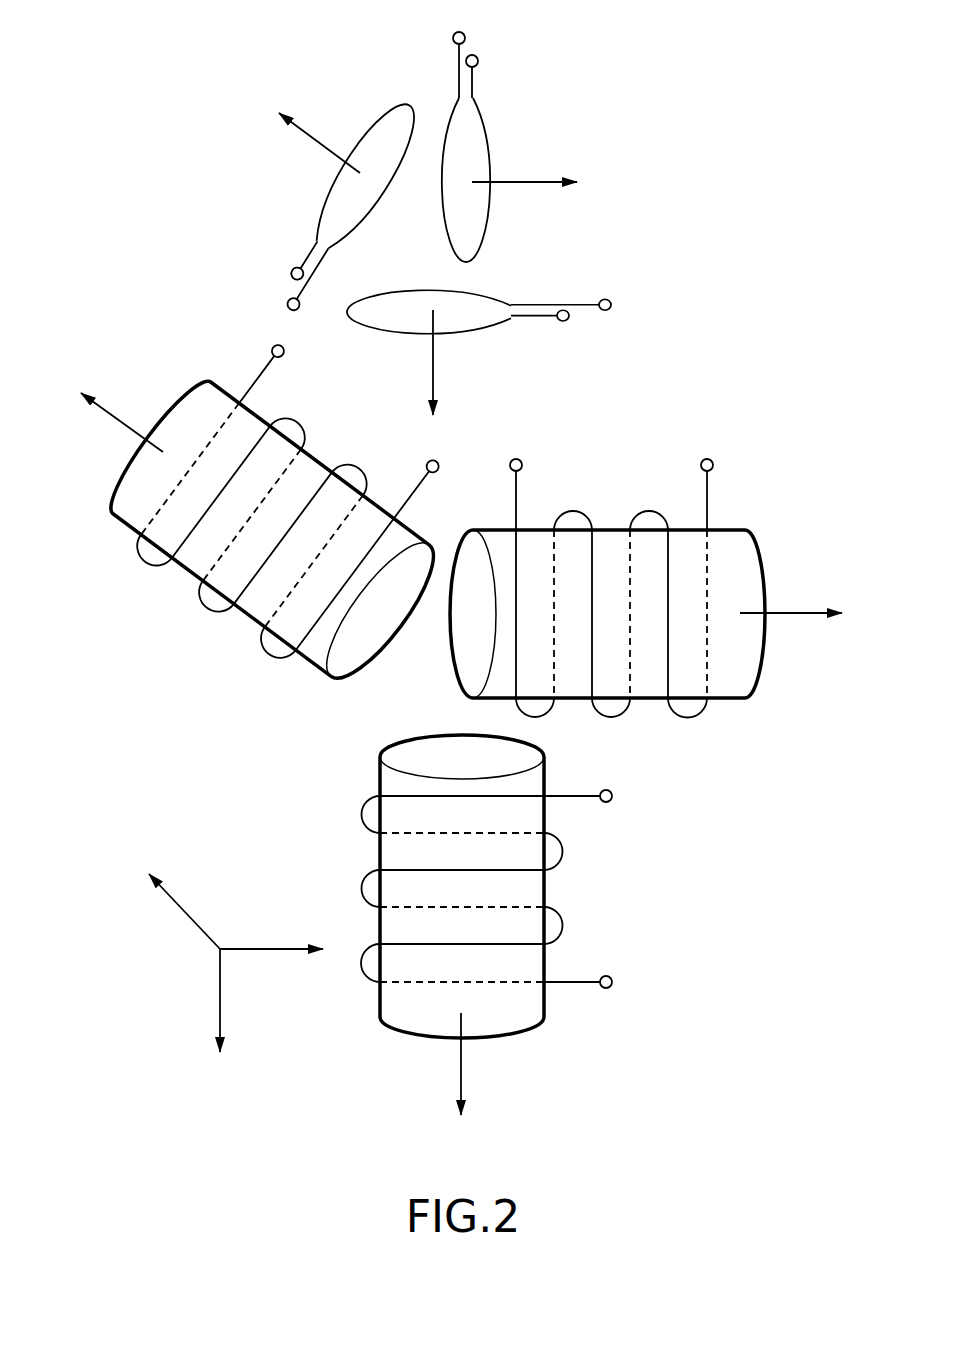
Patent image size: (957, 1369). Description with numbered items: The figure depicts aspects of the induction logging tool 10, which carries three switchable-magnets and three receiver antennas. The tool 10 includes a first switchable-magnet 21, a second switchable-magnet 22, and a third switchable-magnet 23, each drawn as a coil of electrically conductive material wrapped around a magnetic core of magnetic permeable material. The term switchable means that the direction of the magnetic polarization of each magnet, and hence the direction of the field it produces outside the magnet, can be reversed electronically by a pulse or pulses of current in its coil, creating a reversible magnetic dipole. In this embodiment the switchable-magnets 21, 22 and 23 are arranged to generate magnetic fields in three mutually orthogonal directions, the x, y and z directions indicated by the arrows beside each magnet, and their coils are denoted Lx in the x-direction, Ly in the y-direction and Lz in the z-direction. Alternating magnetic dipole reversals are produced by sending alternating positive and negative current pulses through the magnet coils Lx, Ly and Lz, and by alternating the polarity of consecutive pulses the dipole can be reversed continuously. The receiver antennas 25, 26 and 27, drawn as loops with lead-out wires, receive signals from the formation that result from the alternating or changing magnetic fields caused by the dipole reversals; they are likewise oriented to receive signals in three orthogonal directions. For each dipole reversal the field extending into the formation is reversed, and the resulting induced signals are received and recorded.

The induction logging tool 10 is at (701, 153).
The first switchable-magnet 21 is at (668, 908).
The second switchable-magnet 22 is at (609, 487).
The third switchable-magnet 23 is at (197, 628).
The receiver antenna 25 is at (476, 331).
The receiver antenna 26 is at (488, 137).
The receiver antenna 27 is at (376, 123).
The magnet coil Lx is at (639, 618).
The magnet coil Ly is at (283, 506).
The magnet coil Lz is at (452, 873).